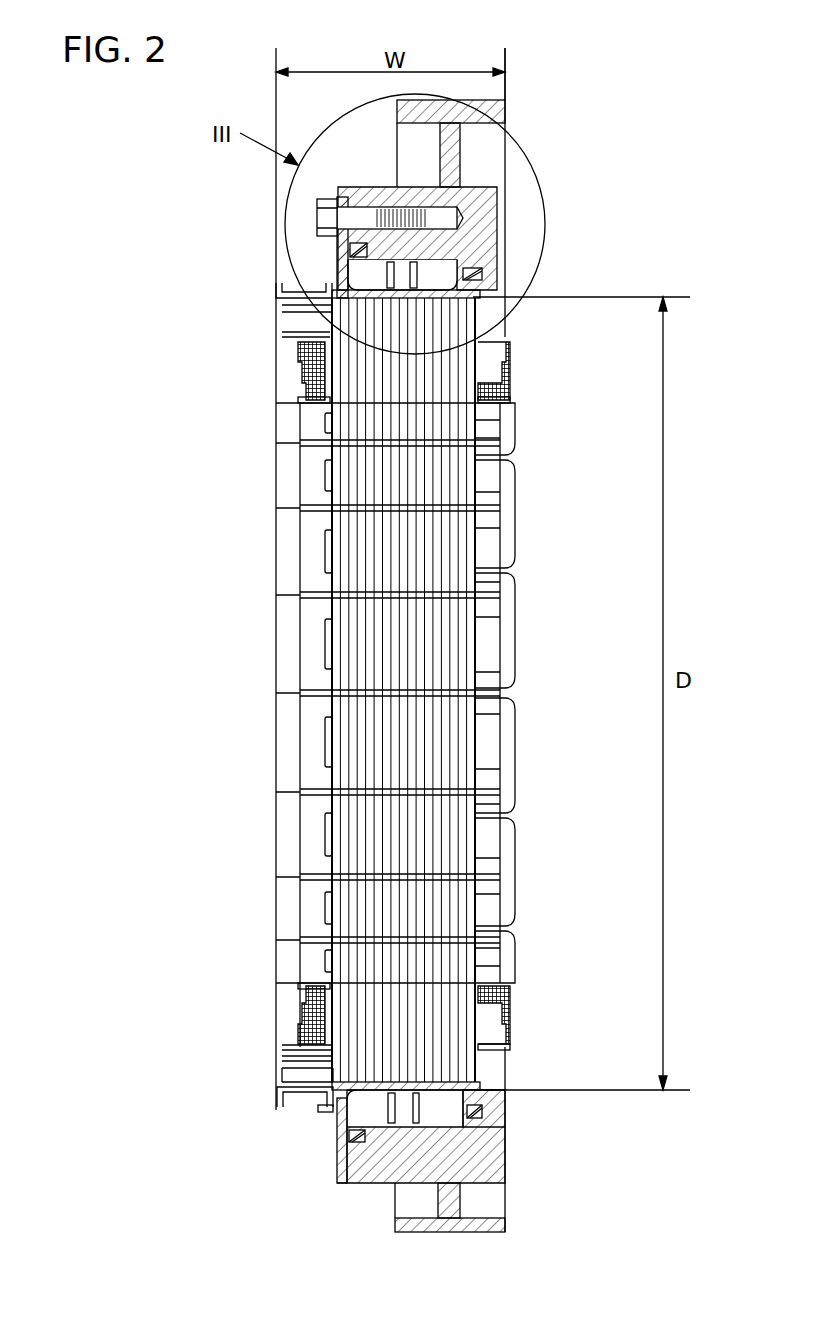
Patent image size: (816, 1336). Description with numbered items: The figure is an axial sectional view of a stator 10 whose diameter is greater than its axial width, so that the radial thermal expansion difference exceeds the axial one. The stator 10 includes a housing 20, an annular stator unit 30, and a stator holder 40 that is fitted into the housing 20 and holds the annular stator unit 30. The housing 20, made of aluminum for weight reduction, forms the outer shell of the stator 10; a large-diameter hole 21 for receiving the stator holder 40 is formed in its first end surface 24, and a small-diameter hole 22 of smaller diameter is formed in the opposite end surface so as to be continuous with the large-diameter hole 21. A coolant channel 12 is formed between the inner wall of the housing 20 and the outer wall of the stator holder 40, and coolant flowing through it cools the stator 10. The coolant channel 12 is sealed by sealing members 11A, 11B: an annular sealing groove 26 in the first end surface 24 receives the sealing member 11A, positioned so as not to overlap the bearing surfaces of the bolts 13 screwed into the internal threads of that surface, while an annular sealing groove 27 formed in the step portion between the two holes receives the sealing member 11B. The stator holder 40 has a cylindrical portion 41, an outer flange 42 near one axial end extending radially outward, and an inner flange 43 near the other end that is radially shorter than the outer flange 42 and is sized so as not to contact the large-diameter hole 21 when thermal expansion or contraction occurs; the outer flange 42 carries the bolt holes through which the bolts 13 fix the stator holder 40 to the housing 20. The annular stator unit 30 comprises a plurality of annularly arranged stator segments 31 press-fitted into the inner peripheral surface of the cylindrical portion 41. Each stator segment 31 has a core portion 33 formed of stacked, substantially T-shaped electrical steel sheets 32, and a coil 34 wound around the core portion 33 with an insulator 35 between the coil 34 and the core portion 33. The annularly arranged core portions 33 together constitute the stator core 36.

The stator 10 is at (152, 328).
The sealing member 11A is at (347, 1132).
The sealing member 11B is at (483, 1118).
The coolant channel 12 is at (437, 1118).
The bolt 13 is at (322, 217).
The housing 20 is at (397, 1228).
The large-diameter hole 21 is at (377, 1098).
The small-diameter hole 22 is at (485, 1090).
The first end surface 24 is at (415, 186).
The annular sealing groove 26 is at (352, 250).
The annular sealing groove 27 is at (483, 274).
The annular stator unit 30 is at (323, 475).
The stator segment 31 is at (506, 764).
The electrical steel sheet 32 is at (345, 743).
The core portion 33 is at (448, 996).
The coil 34 is at (509, 1044).
The insulator 35 is at (500, 1000).
The stator core 36 is at (323, 551).
The stator holder 40 is at (337, 1133).
The cylindrical portion 41 is at (368, 1090).
The outer flange 42 is at (343, 1148).
The inner flange 43 is at (485, 1112).